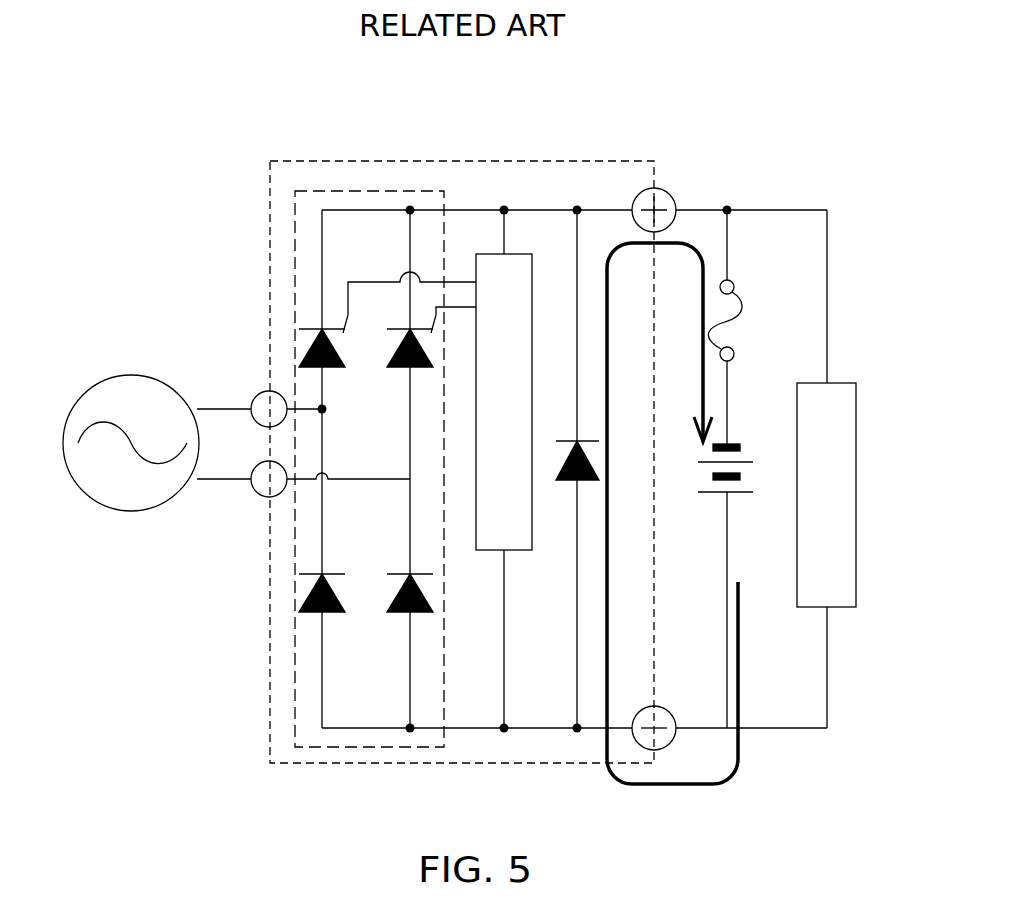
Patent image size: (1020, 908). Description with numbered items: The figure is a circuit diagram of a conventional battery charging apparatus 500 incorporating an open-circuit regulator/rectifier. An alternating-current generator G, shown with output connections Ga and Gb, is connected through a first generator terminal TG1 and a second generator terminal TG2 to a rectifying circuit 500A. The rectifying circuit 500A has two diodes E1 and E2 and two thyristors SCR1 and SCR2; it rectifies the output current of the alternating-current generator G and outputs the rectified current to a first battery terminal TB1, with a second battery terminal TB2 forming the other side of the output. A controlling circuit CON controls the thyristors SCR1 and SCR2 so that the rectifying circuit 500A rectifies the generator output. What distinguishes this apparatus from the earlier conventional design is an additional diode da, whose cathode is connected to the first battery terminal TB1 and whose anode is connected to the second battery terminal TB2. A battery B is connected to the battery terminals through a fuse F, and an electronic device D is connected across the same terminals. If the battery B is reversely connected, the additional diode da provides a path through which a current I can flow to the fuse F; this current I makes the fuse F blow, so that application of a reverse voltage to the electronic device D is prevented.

The battery charging apparatus 500 is at (512, 161).
The rectifying circuit 500A is at (375, 191).
The alternating-current generator G is at (131, 375).
The generator output terminal a Ga is at (194, 407).
The generator output terminal b Gb is at (192, 482).
The first generator terminal TG1 is at (257, 396).
The second generator terminal TG2 is at (260, 497).
The thyristor SCR1 is at (303, 348).
The thyristor SCR2 is at (398, 348).
The diode E1 is at (302, 601).
The diode E2 is at (399, 600).
The controlling circuit CON is at (518, 552).
The additional diode da is at (572, 483).
The first battery terminal TB1 is at (660, 189).
The second battery terminal TB2 is at (668, 745).
The fuse F is at (742, 312).
The battery B is at (733, 444).
The electronic device D is at (843, 383).
The current I is at (740, 752).